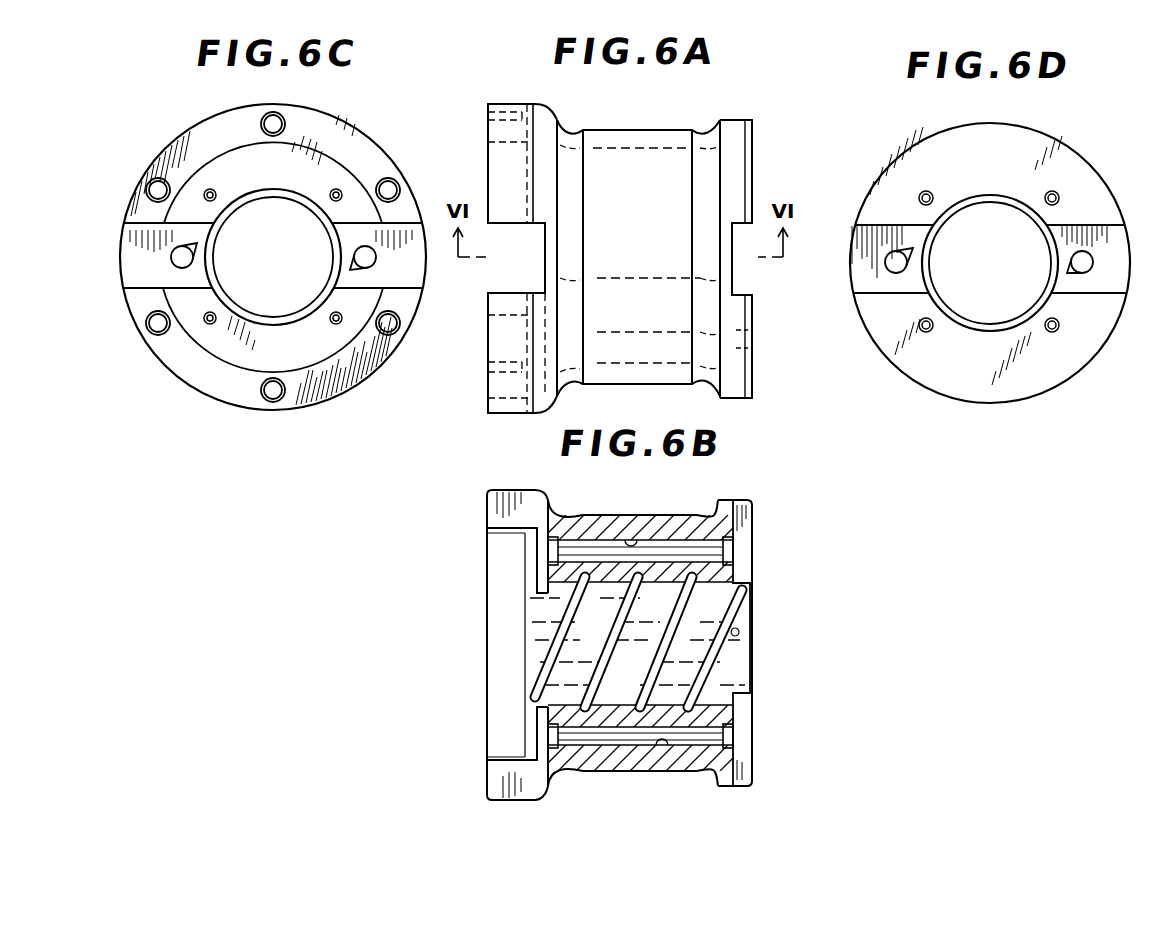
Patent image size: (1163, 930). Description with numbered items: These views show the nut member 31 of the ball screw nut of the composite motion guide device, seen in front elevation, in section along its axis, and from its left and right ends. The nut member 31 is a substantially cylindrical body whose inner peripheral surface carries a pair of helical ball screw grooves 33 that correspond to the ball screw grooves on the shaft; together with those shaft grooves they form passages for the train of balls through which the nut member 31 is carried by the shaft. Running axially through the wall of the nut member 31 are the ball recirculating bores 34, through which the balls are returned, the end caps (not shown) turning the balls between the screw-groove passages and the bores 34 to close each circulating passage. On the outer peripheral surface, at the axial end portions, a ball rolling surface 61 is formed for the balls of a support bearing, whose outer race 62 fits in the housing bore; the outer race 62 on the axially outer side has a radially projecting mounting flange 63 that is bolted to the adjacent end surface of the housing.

In FIG. 6C, the nut member 31 is at (190, 127).
In FIG. 6A, the nut member 31 is at (667, 148).
In FIG. 6D, the nut member 31 is at (922, 370).
In FIG. 6B, the nut member 31 is at (678, 517).
In FIG. 6B, the ball screw grooves 33 is at (740, 625).
In FIG. 6D, the ball recirculating bores 34 is at (890, 263).
In FIG. 6B, the ball recirculating bores 34 is at (631, 543).
In FIG. 6A, the ball rolling surface 61 is at (570, 133).
In FIG. 6B, the ball rolling surface 61 is at (570, 513).
In FIG. 6A, the outer race 62 is at (702, 130).
In FIG. 6B, the outer race 62 is at (715, 503).
In FIG. 6A, the mounting flange 63 is at (502, 167).
In FIG. 6B, the mounting flange 63 is at (498, 508).